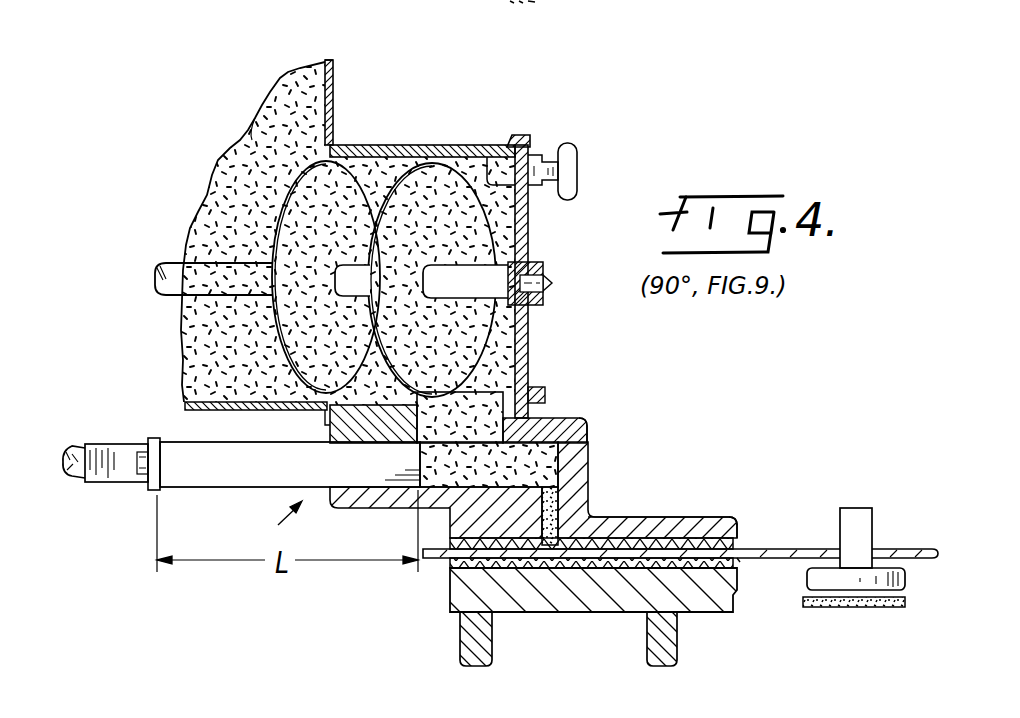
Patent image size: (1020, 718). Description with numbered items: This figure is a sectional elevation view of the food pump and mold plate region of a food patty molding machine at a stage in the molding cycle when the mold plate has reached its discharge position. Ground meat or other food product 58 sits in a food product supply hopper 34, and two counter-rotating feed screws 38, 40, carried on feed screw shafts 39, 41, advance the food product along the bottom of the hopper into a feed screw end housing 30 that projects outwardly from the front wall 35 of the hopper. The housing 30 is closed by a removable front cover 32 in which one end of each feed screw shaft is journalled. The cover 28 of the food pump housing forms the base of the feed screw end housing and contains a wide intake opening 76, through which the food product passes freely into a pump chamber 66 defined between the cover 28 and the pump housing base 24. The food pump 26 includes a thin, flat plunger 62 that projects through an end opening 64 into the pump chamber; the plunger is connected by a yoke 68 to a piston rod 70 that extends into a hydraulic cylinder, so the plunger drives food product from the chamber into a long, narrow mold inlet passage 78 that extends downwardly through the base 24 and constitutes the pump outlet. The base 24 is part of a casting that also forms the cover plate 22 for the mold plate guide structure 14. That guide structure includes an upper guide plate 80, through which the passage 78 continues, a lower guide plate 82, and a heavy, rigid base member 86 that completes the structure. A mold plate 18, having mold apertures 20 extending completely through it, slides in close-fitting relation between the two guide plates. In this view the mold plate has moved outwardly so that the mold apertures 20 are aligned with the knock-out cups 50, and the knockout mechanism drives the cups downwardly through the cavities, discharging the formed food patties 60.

The mold plate guide structure 14 is at (742, 537).
The mold plate 18 is at (605, 548).
The mold apertures 20 is at (879, 550).
The cover plate 22 is at (673, 517).
The base 24 is at (375, 504).
The food pump 26 is at (272, 522).
The cover 28 is at (547, 425).
The feed screw end housing 30 is at (383, 223).
The removable front cover 32 is at (527, 238).
The food product supply hopper 34 is at (337, 61).
The front wall 35 is at (337, 93).
The feed screw 38 is at (338, 163).
The feed screw shaft 39 is at (160, 290).
The feed screw 40 is at (432, 249).
The feed screw shaft 41 is at (331, 299).
The knock-out cups 50 is at (904, 572).
The food product 58 is at (265, 108).
The food patties 60 is at (831, 608).
The plunger 62 is at (237, 473).
The end opening 64 is at (328, 441).
The pump chamber 66 is at (587, 428).
The yoke 68 is at (100, 474).
The piston rod 70 is at (75, 447).
The intake opening 76 is at (487, 407).
The mold inlet passage 78 is at (589, 495).
The upper guide plate 80 is at (735, 529).
The lower guide plate 82 is at (739, 562).
The base member 86 is at (593, 607).